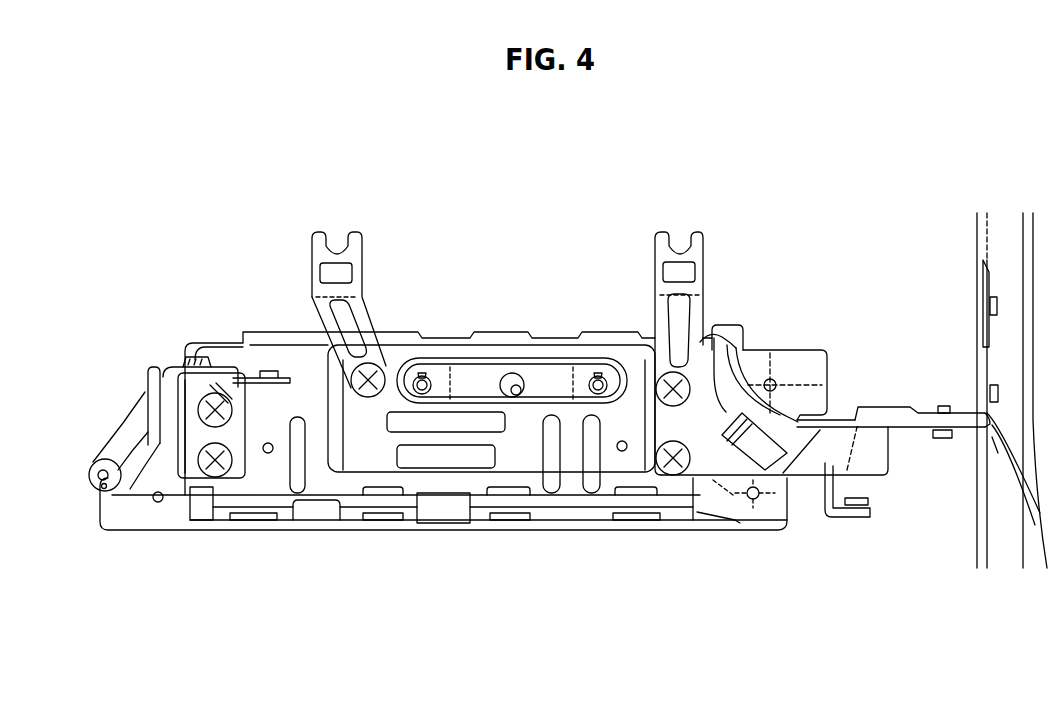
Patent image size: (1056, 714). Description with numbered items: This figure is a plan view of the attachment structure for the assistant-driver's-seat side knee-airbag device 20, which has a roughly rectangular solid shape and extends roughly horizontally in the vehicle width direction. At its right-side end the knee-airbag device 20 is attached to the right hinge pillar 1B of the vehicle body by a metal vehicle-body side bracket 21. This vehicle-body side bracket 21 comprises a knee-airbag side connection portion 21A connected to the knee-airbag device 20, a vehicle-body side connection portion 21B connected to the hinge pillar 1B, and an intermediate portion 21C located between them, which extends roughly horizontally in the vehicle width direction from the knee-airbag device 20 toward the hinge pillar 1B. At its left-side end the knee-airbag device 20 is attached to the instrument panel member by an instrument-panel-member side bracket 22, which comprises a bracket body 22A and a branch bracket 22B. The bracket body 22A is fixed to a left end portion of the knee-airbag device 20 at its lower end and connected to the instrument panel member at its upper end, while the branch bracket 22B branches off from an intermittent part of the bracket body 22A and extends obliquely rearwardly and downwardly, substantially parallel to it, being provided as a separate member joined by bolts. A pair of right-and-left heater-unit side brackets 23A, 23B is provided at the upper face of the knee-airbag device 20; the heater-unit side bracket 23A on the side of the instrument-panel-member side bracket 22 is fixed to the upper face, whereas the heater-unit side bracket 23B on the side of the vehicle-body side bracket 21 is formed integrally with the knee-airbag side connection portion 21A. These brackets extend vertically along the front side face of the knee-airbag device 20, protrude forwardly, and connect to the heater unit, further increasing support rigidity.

The right hinge pillar 1B is at (987, 503).
The knee-airbag device 20 is at (393, 530).
The vehicle-body side bracket 21 is at (825, 424).
The knee-airbag side connection portion 21A is at (698, 373).
The vehicle-body side connection portion 21B is at (963, 408).
The intermediate portion 21C is at (836, 518).
The instrument-panel-member side bracket 22 is at (118, 497).
The bracket body 22A is at (200, 372).
The branch bracket 22B is at (143, 397).
The heater-unit side bracket 23A is at (368, 258).
The heater-unit side bracket 23B is at (705, 256).